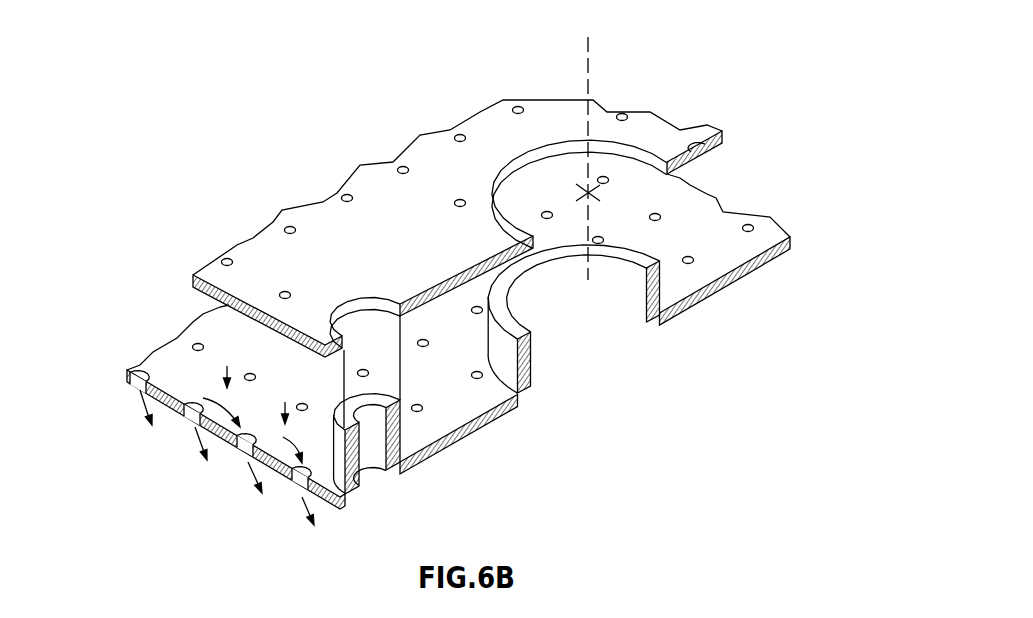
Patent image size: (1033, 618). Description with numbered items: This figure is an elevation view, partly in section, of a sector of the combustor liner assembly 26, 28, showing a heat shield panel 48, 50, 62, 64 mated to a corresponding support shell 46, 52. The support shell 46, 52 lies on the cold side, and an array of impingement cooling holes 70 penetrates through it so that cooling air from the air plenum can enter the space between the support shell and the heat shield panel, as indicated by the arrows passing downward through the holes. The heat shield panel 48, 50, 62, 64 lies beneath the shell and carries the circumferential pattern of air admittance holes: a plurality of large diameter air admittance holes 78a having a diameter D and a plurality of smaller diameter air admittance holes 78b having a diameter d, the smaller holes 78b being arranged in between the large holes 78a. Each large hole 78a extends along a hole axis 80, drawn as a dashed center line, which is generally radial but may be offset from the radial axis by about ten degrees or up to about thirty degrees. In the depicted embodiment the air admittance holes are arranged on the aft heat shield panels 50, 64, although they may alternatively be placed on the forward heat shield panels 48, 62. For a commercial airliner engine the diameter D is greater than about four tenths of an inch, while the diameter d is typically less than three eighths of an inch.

The inner liner assembly 26 is at (407, 228).
The liner assembly 28 is at (407, 228).
The support shell 46 is at (457, 228).
The inner support shell 52 is at (457, 228).
The forward inner heat shield panel 48 is at (421, 355).
The aft inner heat shield panel 50 is at (421, 355).
The heat shield panel 62 is at (421, 355).
The heat shield panel 64 is at (421, 355).
The impingement cooling holes 70 is at (228, 223).
The large diameter air admittance hole 78a is at (573, 328).
The smaller diameter air admittance hole 78b is at (386, 426).
The hole axis 80 is at (591, 62).
The diameter of large air admittance hole D is at (639, 293).
The diameter of smaller air admittance hole d is at (390, 346).